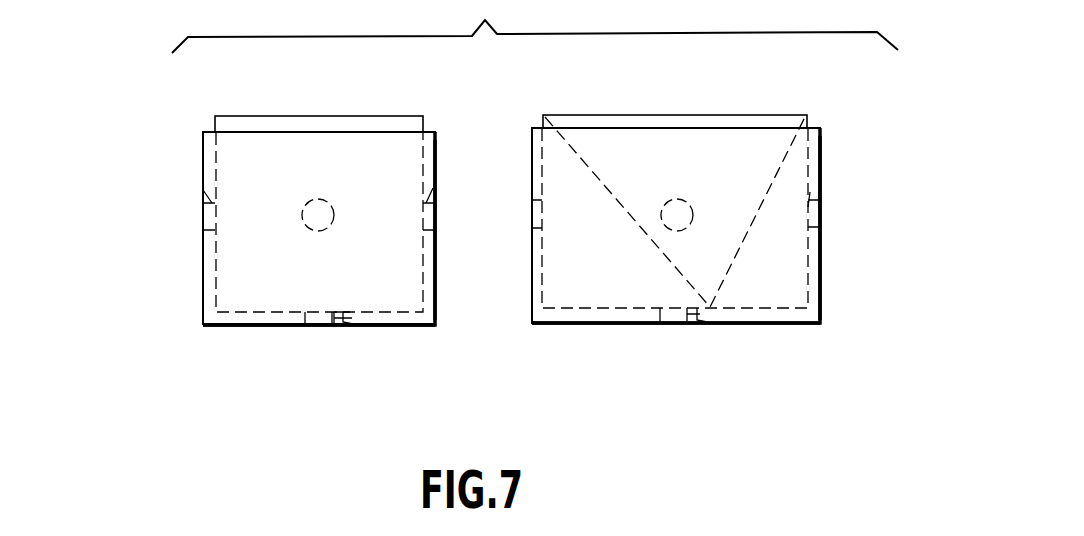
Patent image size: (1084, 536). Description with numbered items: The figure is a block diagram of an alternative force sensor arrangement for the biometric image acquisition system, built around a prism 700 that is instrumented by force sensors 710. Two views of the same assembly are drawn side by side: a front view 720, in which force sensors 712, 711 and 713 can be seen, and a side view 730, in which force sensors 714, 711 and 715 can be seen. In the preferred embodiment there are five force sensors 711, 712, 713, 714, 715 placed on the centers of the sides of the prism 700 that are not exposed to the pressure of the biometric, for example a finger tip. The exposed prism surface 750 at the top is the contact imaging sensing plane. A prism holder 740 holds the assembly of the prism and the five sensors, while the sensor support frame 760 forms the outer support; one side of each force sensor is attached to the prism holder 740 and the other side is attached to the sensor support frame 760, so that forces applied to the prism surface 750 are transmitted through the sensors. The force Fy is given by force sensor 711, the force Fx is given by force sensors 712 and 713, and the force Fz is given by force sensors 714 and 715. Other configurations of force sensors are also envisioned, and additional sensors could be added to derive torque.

The prism 700 is at (663, 115).
The force sensors 710 is at (873, 235).
The force sensor 711 is at (358, 330).
The force sensor 712 is at (203, 190).
The force sensor 713 is at (433, 188).
The force sensor 714 is at (307, 228).
The force sensor 715 is at (822, 183).
The front view 720 is at (242, 372).
The side view 730 is at (788, 368).
The prism holder 740 is at (437, 153).
The prism surface 750 is at (283, 116).
The sensor support frame 760 is at (553, 325).